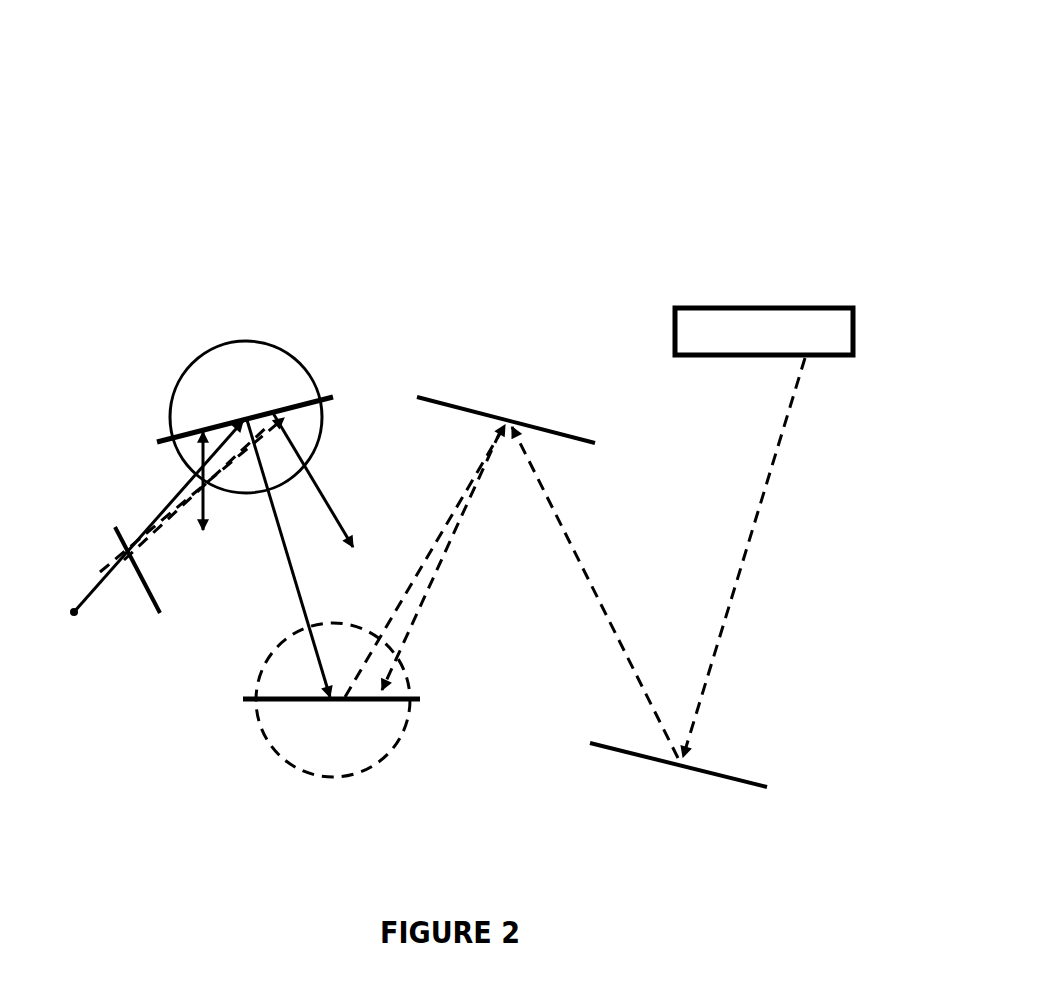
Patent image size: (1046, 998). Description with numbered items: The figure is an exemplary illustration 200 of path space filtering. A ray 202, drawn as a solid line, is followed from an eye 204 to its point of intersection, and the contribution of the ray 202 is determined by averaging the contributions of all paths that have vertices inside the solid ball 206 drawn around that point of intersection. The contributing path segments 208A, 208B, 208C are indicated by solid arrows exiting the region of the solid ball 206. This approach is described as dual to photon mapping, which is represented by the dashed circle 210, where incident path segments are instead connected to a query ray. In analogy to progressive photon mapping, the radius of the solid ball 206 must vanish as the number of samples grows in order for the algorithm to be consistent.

The illustration 200 is at (701, 86).
The ray 202 is at (158, 498).
The eye 204 is at (110, 653).
The solid ball 206 is at (246, 342).
The contributing path segment 208A is at (394, 432).
The contributing path segment 208B is at (300, 621).
The contributing path segment 208C is at (207, 493).
The dashed circle 210 is at (325, 770).